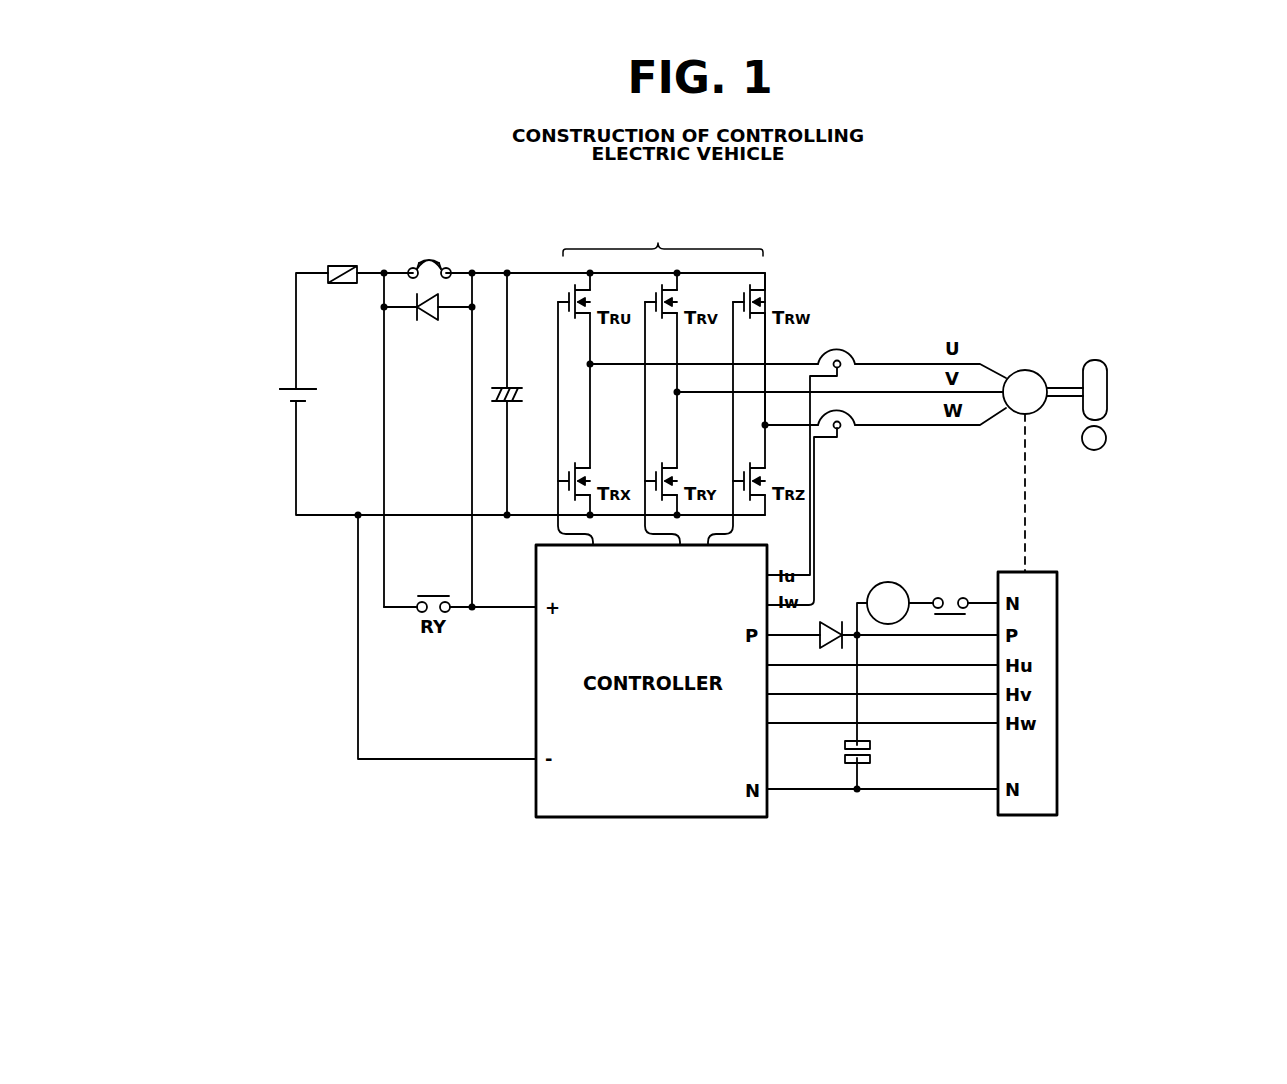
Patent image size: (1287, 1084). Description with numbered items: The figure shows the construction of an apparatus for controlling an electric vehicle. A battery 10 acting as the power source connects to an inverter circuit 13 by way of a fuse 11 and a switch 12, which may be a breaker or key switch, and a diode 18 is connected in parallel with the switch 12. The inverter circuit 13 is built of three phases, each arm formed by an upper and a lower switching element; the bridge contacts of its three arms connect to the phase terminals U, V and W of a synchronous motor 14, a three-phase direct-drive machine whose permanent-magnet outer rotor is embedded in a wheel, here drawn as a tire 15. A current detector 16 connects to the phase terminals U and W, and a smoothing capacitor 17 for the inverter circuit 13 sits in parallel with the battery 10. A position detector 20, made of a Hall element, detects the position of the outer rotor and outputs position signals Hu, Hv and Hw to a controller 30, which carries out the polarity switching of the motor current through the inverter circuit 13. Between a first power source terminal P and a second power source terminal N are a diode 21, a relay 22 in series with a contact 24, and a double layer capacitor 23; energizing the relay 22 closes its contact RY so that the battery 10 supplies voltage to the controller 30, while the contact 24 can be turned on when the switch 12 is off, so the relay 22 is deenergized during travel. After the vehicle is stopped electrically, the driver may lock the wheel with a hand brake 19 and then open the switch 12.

The battery 10 is at (290, 398).
The fuse 11 is at (337, 264).
The switch 12 is at (429, 262).
The inverter circuit 13 is at (716, 233).
The synchronous motor 14 is at (1028, 368).
The tire 15 is at (1108, 376).
The current detector 16 is at (833, 344).
The smoothing capacitor 17 is at (516, 385).
The diode 18 is at (412, 300).
The hand brake 19 is at (1094, 451).
The position detector 20 is at (1058, 628).
The diode 21 is at (830, 620).
The relay 22 is at (893, 581).
The double layer capacitor 23 is at (873, 757).
The contact 24 is at (948, 597).
The controller 30 is at (662, 820).